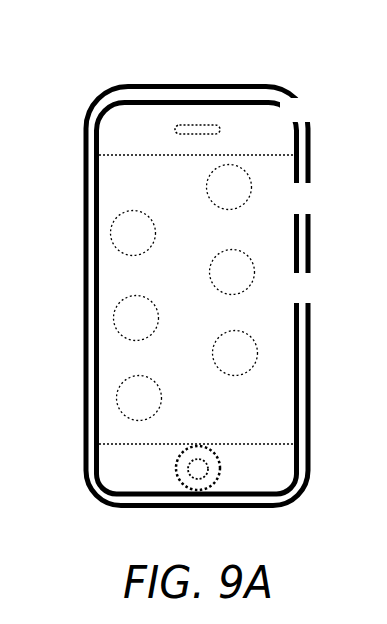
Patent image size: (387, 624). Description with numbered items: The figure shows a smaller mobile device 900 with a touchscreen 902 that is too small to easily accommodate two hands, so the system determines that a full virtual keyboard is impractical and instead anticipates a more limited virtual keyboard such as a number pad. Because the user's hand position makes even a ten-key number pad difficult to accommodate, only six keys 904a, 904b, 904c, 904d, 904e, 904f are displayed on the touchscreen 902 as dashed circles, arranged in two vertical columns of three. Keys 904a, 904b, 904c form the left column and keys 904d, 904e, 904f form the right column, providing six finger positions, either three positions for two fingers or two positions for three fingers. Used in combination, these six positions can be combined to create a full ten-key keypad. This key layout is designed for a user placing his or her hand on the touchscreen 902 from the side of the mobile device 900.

The mobile device 900 is at (187, 81).
The touchscreen 902 is at (112, 168).
The key 904a is at (83, 211).
The key 904b is at (114, 315).
The key 904c is at (116, 397).
The key 904d is at (251, 186).
The key 904e is at (255, 268).
The key 904f is at (257, 351).